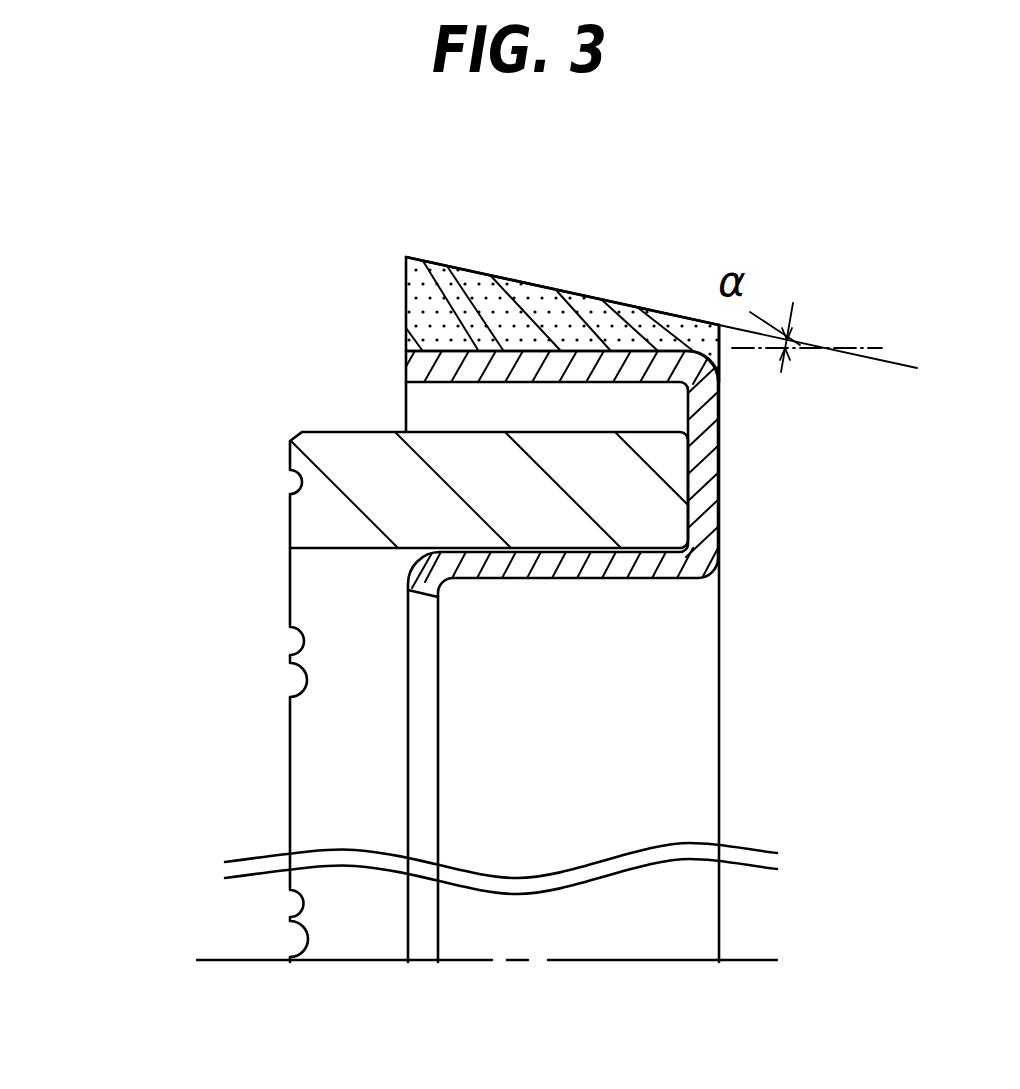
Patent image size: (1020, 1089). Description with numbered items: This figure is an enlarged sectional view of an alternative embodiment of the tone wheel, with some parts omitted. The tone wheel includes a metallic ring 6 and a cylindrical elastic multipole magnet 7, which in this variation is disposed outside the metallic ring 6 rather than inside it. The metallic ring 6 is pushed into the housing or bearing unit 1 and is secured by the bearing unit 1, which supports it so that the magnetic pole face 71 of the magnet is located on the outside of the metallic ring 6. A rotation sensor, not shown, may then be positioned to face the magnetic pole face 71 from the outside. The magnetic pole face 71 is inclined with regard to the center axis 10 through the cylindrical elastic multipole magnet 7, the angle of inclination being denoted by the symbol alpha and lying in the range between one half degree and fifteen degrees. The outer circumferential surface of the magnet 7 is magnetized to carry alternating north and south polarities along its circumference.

The bearing unit 1 is at (493, 660).
The metallic ring 6 is at (606, 643).
The cylindrical elastic multipole magnet 7 is at (406, 288).
The magnetic pole face 71 is at (562, 276).
The center axis 10 is at (250, 960).